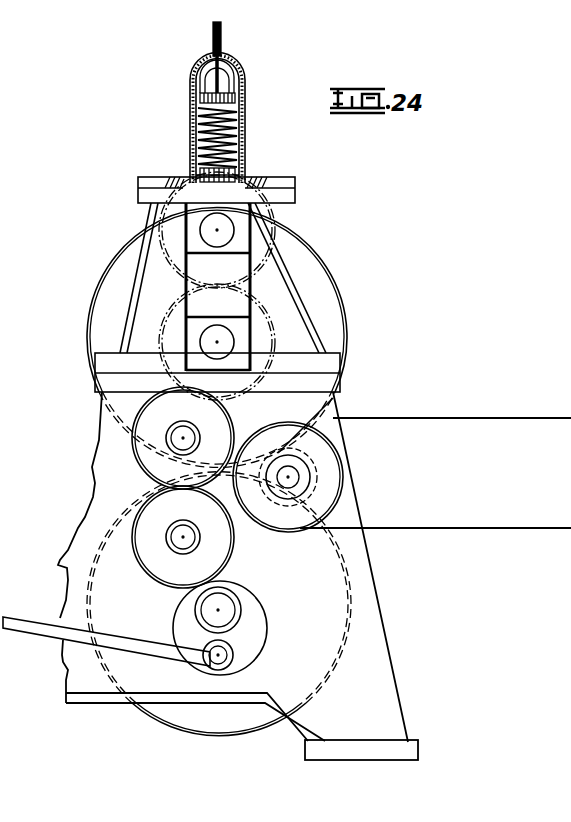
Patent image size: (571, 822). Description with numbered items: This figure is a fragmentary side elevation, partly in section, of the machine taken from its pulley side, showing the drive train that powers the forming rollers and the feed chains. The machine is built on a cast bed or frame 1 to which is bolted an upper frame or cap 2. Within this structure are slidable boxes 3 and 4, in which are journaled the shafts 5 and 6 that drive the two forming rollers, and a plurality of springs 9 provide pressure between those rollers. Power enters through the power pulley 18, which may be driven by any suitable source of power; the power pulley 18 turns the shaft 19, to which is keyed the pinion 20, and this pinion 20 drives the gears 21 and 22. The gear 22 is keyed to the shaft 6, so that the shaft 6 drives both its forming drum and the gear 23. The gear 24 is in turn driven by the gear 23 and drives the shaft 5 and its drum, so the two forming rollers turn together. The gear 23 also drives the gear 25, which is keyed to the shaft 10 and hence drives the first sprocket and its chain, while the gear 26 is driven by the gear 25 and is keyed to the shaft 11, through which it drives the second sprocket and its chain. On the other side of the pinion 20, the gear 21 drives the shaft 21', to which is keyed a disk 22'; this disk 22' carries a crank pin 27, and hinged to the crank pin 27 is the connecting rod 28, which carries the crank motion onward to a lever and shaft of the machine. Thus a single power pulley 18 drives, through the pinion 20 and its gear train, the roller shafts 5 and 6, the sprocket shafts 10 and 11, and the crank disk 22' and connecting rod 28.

The cast bed or frame 1 is at (103, 476).
The upper frame or cap 2 is at (260, 287).
The slidable box 3 is at (216, 174).
The slidable box 4 is at (274, 342).
The shaft 5 is at (210, 278).
The shaft 6 is at (139, 336).
The springs 9 is at (239, 134).
The shaft 10 is at (125, 438).
The shaft 11 is at (136, 537).
The power pulley 18 is at (315, 477).
The shaft 19 is at (340, 478).
The pinion 20 is at (326, 467).
The gear 21 is at (234, 604).
The shaft 21' is at (254, 604).
The gear 22 is at (241, 337).
The disk 22' is at (243, 628).
The gear 23 is at (241, 365).
The gear 24 is at (254, 230).
The gear 25 is at (142, 438).
The gear 26 is at (205, 537).
The crank pin 27 is at (181, 692).
The connecting rod 28 is at (106, 620).